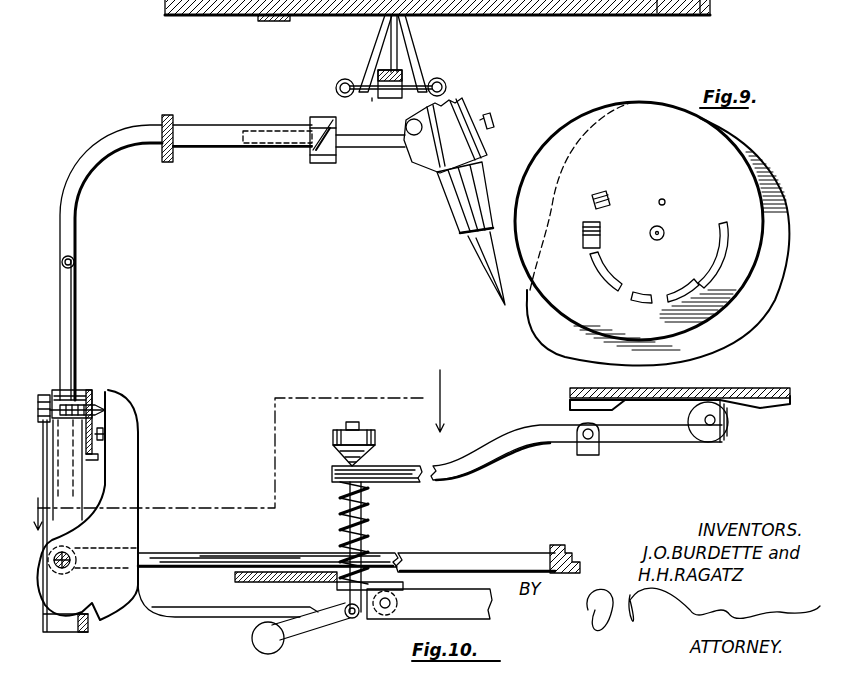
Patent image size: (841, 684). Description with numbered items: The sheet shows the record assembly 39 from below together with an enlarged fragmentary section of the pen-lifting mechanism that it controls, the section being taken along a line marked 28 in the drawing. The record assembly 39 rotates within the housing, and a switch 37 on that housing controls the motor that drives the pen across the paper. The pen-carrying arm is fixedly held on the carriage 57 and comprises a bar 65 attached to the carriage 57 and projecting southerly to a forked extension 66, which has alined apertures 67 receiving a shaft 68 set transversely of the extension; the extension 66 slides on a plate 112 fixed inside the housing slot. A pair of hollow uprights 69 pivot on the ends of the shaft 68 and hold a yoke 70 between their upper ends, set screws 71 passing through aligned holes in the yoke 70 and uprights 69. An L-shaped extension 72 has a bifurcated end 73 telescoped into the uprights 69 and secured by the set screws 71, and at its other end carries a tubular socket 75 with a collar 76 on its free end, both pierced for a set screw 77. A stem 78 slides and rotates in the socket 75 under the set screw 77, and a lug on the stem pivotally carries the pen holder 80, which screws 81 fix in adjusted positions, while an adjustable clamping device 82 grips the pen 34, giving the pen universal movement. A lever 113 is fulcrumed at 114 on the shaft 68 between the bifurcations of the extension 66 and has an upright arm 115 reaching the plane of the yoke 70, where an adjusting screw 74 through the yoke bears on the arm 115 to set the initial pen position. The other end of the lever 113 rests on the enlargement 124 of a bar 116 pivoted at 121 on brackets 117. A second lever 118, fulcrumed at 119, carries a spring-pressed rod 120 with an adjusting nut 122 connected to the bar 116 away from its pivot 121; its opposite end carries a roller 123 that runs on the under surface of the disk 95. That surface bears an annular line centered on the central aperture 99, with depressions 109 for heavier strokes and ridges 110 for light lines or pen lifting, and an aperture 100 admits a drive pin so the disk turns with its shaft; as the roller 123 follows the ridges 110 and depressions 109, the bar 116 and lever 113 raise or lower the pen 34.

In FIG. 10, the pivot axis / dash-dot reference line 28 is at (239, 450).
In FIG. 10, the pen 34 is at (471, 233).
In FIG. 10, the switch 37 is at (284, 18).
In FIG. 9, the record assembly 39 is at (574, 132).
In FIG. 10, the carriage 57 is at (553, 547).
In FIG. 10, the bar 65 is at (436, 561).
In FIG. 10, the forked extension 66 is at (410, 60).
In FIG. 10, the alined apertures 67 is at (72, 553).
In FIG. 10, the shaft 68 is at (366, 95).
In FIG. 10, the hollow uprights 69 is at (345, 79).
In FIG. 10, the yoke 70 is at (95, 391).
In FIG. 10, the set screws 71 is at (104, 437).
In FIG. 10, the L-shaped extension 72 is at (78, 285).
In FIG. 10, the bifurcated end 73 is at (67, 382).
In FIG. 10, the adjusting screw 74 is at (44, 394).
In FIG. 10, the tubular socket 75 is at (204, 136).
In FIG. 10, the collar 76 is at (318, 162).
In FIG. 10, the set screw 77 is at (332, 163).
In FIG. 10, the stem 78 is at (372, 147).
In FIG. 10, the pen holder 80 is at (445, 135).
In FIG. 10, the screws 81 is at (415, 135).
In FIG. 10, the adjustable clamping device 82 is at (492, 114).
In FIG. 10, the disk 95 is at (570, 390).
In FIG. 9, the disk 95 is at (574, 294).
In FIG. 9, the central aperture 99 is at (665, 234).
In FIG. 9, the aperture 100 is at (666, 202).
In FIG. 10, the depressions 109 is at (745, 402).
In FIG. 9, the depressions 109 is at (600, 237).
In FIG. 10, the ridges 110 is at (570, 405).
In FIG. 9, the ridges 110 is at (602, 267).
In FIG. 10, the plate 112 is at (250, 583).
In FIG. 10, the lever 113 is at (394, 40).
In FIG. 10, the fulcrum 114 is at (394, 101).
In FIG. 10, the upright arm 115 is at (106, 478).
In FIG. 10, the bar 116 is at (306, 626).
In FIG. 10, the brackets 117 is at (429, 604).
In FIG. 10, the second lever 118 is at (492, 450).
In FIG. 10, the fulcrum 119 is at (577, 446).
In FIG. 10, the spring-pressed rod 120 is at (340, 526).
In FIG. 10, the pivot 121 is at (391, 603).
In FIG. 10, the adjusting nut 122 is at (372, 438).
In FIG. 10, the roller 123 is at (722, 436).
In FIG. 10, the enlargement 124 is at (268, 638).